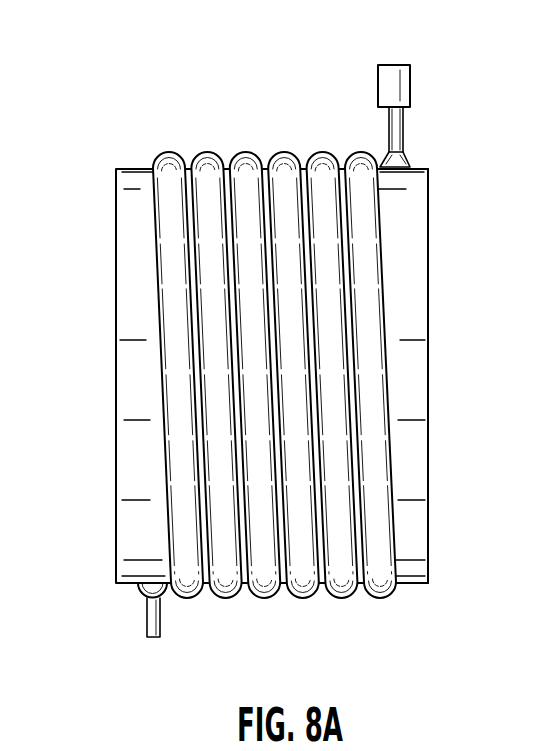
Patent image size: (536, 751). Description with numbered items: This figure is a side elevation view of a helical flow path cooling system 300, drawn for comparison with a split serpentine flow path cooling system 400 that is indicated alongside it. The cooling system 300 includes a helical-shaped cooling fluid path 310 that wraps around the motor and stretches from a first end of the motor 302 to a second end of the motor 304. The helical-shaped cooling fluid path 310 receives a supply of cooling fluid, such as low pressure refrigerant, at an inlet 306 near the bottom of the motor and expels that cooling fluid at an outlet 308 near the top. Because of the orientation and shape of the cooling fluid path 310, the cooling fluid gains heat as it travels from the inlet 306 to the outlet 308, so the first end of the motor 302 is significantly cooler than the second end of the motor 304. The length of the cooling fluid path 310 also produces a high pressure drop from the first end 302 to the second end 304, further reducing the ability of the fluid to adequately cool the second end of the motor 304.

The helical flow path cooling system 300 is at (60, 116).
The first end of motor 302 is at (140, 373).
The second end of motor 304 is at (403, 372).
The inlet 306 is at (150, 630).
The outlet 308 is at (412, 85).
The helical-shaped cooling fluid path 310 is at (245, 152).
The split serpentine flow path cooling system 400 is at (470, 745).